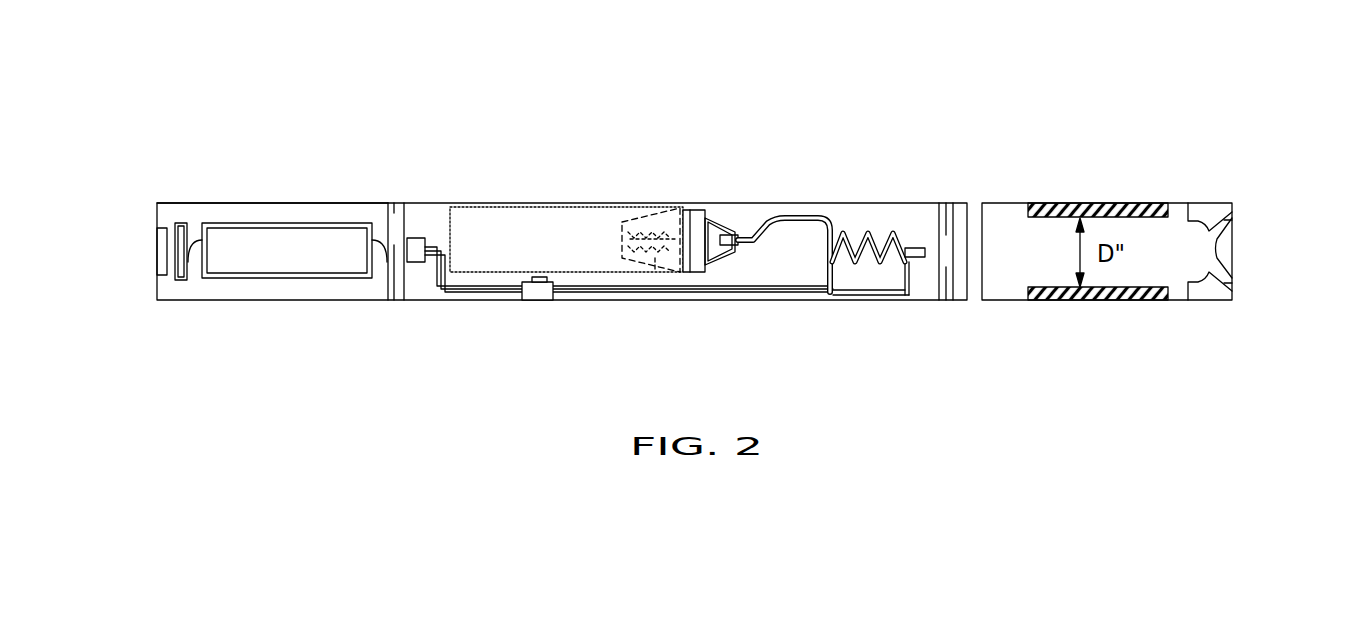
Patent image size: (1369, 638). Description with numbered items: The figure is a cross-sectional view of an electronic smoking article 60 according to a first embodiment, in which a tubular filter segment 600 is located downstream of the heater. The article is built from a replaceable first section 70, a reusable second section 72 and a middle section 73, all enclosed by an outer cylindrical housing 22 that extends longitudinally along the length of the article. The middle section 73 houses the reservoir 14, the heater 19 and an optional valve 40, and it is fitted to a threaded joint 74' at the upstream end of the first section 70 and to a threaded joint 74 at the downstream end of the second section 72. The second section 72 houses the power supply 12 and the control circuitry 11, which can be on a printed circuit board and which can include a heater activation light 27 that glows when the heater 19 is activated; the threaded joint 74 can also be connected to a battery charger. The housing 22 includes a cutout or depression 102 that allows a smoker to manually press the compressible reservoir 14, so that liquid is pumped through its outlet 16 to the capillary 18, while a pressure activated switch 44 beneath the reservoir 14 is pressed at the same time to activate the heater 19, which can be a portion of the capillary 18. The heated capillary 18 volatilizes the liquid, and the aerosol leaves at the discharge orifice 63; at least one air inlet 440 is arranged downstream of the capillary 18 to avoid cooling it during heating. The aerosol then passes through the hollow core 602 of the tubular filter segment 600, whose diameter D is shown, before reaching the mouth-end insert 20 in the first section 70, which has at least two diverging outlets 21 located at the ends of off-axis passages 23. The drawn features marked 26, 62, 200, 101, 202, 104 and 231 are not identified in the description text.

The electronic smoking article 60 is at (540, 143).
The cutout or depression 102 is at (518, 202).
The second section 72 is at (303, 202).
The threaded joint 74 is at (383, 226).
The threaded joint 74' is at (964, 197).
The power supply 12 is at (220, 223).
The heater activation light 27 is at (162, 252).
The control circuitry 11 is at (181, 257).
The reservoir 14 is at (568, 232).
The electrical leads 26 is at (763, 290).
The pressure activated switch 44 is at (540, 273).
The valve 40 is at (655, 272).
The outer cylindrical housing 22 is at (623, 202).
The outlet 16 is at (745, 232).
The middle section 73 is at (714, 222).
The electrical lead 62 is at (800, 220).
The lead 200 is at (800, 220).
The lead end 101 is at (828, 264).
The capillary 18 is at (868, 233).
The heater 19 is at (869, 265).
The heater lead 202 is at (883, 265).
The contact tab 104 is at (918, 260).
The discharge orifice 63 is at (917, 262).
The first section 70 is at (961, 203).
The air inlet 440 is at (977, 203).
The mouth-end insert 20 is at (1234, 248).
The tubular filter segment 600 is at (1160, 203).
The hollow core 602 is at (1137, 278).
The vapor passage 231 is at (1000, 233).
The off-axis passages 23 is at (1218, 212).
The outlets 21 is at (1234, 217).